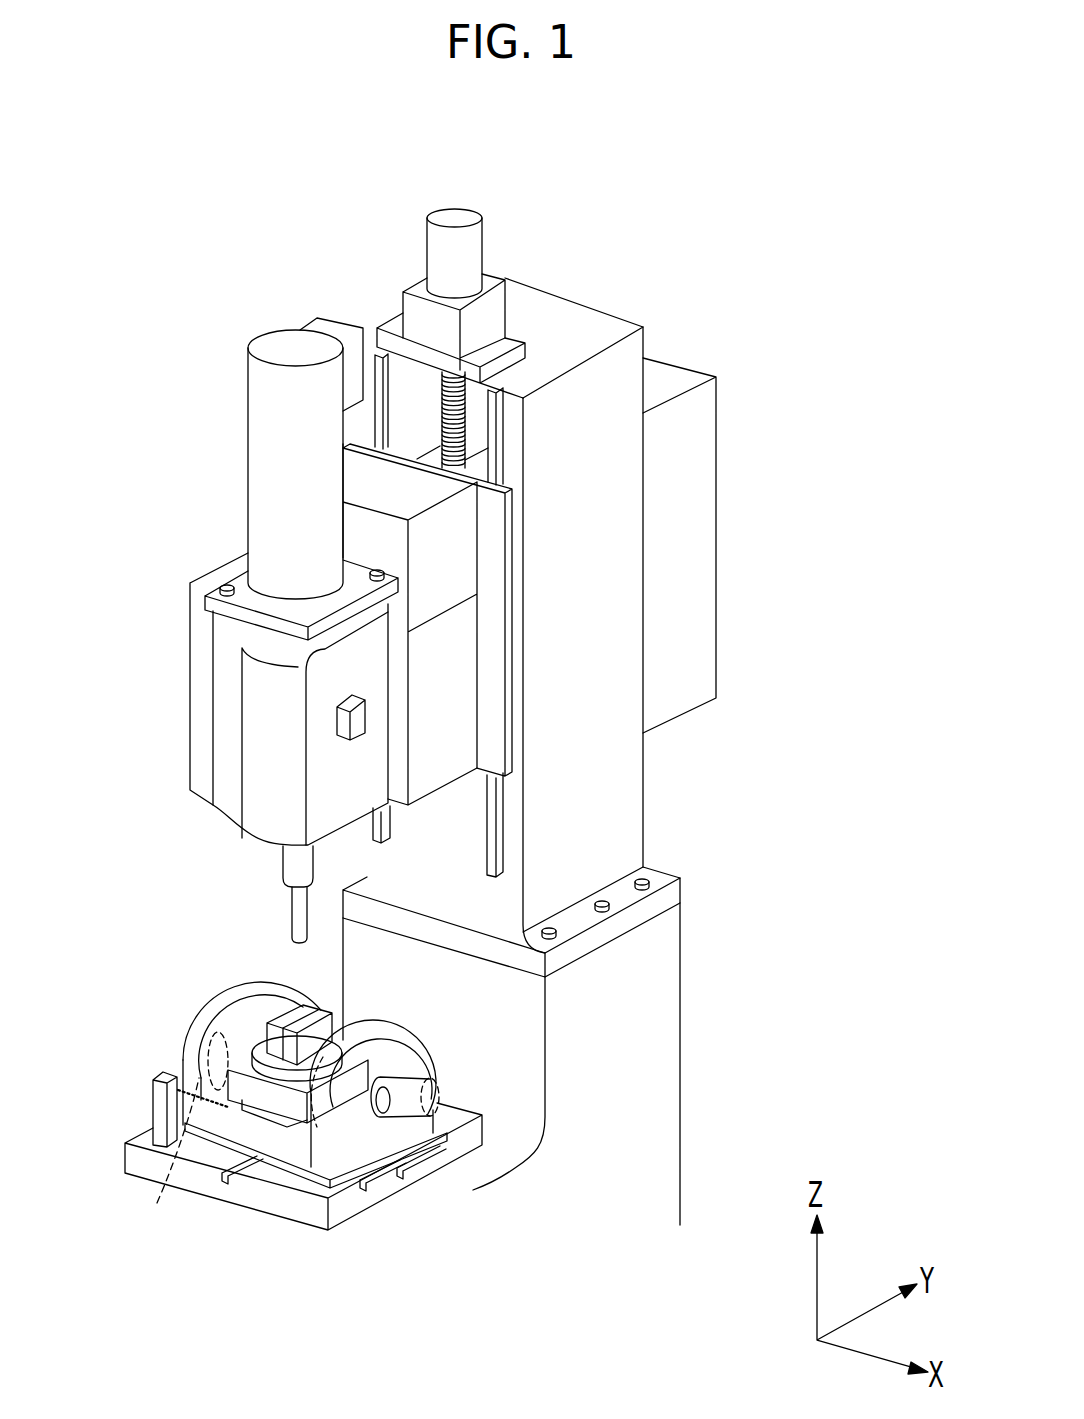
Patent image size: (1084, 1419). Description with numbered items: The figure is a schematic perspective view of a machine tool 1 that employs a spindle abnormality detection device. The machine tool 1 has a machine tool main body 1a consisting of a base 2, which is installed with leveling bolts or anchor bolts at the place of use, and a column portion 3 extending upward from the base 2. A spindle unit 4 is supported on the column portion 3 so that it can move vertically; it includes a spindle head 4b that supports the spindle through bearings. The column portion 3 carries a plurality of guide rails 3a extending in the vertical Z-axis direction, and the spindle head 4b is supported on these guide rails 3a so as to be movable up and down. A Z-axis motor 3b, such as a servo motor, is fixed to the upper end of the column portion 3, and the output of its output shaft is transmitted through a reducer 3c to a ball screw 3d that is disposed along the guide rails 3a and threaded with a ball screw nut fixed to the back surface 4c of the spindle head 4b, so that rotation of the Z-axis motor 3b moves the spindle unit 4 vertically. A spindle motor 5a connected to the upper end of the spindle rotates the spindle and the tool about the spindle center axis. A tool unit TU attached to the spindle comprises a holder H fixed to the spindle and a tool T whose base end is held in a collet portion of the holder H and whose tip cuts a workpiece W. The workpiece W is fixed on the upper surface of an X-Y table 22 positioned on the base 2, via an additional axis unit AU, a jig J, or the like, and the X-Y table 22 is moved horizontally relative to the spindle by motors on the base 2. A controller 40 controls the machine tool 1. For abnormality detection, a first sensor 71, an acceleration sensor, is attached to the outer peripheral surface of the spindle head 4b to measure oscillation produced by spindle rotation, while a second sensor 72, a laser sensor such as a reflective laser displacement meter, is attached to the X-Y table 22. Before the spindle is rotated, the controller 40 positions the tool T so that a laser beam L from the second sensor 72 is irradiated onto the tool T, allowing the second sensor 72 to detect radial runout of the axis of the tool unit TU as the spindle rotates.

The machine tool 1 is at (665, 199).
The machine tool main body 1a is at (645, 818).
The base 2 is at (537, 1230).
The column portion 3 is at (612, 537).
The guide rails 3a is at (376, 426).
The Z-axis motor 3b is at (427, 230).
The reducer 3c is at (497, 308).
The ball screw 3d is at (442, 379).
The spindle unit 4 is at (172, 614).
The spindle head 4b is at (452, 703).
The back surface 4c is at (486, 469).
The spindle motor 5a is at (248, 338).
The controller 40 is at (716, 612).
The first sensor 71 is at (337, 725).
The second sensor 72 is at (150, 1101).
The X-Y table 22 is at (257, 1197).
The additional axis unit AU is at (180, 1019).
The tool unit TU is at (287, 863).
The holder H is at (283, 871).
The tool T is at (292, 918).
The workpiece W is at (287, 1032).
The jig J is at (341, 1036).
The laser beam L is at (172, 1148).